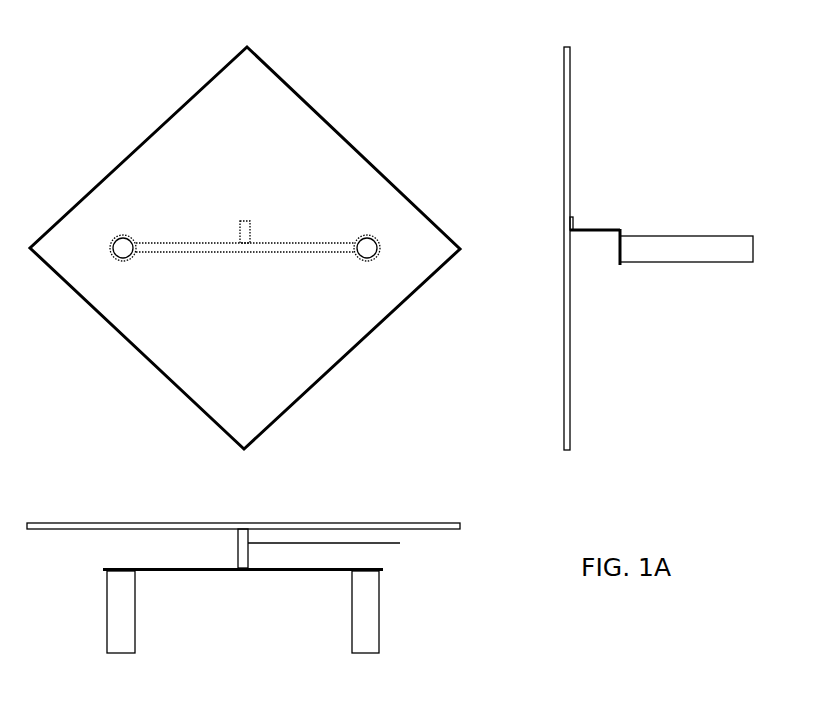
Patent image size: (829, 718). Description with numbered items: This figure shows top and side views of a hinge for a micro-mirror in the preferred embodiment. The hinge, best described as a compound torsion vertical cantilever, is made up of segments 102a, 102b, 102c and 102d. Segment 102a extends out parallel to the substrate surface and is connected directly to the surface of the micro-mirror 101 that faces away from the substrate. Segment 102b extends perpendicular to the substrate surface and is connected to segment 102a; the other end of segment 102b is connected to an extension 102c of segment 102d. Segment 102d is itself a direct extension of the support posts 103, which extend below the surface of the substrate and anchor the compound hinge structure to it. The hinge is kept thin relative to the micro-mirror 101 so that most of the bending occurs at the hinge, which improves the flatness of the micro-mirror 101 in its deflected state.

The micro-mirror 101 is at (205, 115).
The hinge segment 102a is at (252, 223).
The hinge segment 102b is at (255, 243).
The extension of segment 102d 102c is at (622, 233).
The hinge segment 102d is at (178, 245).
The support posts 103 is at (113, 245).